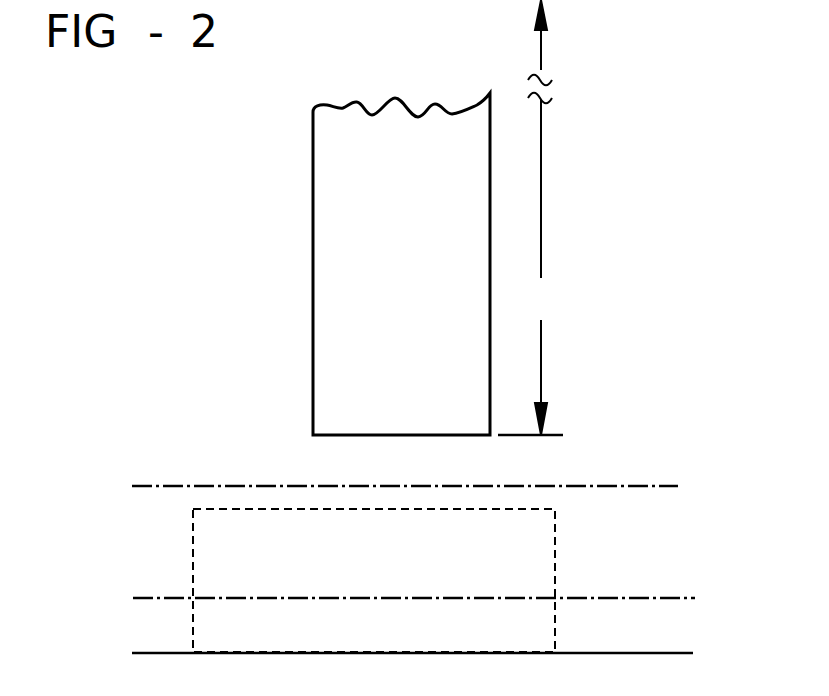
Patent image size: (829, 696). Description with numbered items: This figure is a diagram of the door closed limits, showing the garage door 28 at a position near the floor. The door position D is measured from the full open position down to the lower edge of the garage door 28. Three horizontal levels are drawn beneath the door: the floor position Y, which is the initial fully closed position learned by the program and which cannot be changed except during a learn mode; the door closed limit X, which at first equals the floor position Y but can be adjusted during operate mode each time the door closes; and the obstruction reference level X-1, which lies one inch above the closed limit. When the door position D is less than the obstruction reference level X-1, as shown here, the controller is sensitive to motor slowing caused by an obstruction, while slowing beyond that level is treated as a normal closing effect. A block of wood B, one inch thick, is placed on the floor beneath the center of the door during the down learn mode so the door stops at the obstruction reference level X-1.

The garage door 28 is at (313, 250).
The door position D is at (530, 217).
The block of wood B is at (193, 563).
The door closed limit X is at (424, 599).
The obstruction reference level X-1 is at (428, 487).
The floor position Y is at (423, 654).